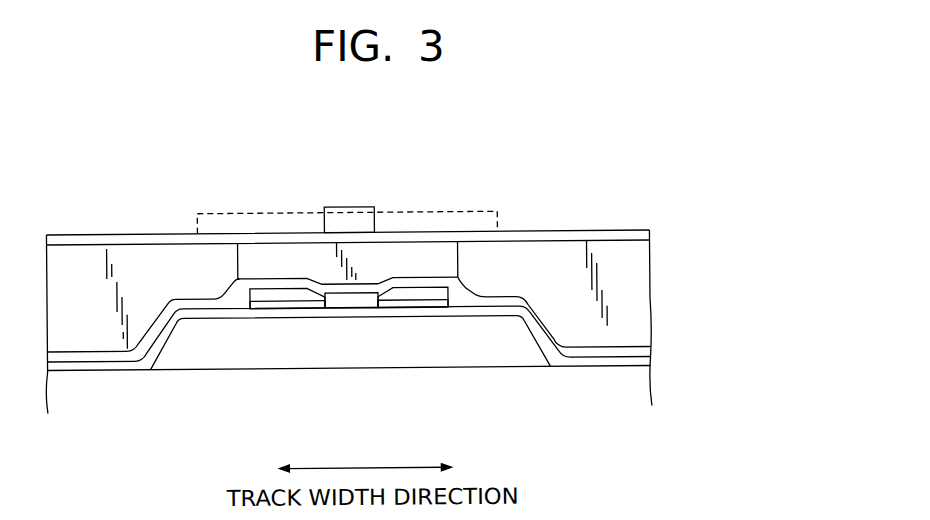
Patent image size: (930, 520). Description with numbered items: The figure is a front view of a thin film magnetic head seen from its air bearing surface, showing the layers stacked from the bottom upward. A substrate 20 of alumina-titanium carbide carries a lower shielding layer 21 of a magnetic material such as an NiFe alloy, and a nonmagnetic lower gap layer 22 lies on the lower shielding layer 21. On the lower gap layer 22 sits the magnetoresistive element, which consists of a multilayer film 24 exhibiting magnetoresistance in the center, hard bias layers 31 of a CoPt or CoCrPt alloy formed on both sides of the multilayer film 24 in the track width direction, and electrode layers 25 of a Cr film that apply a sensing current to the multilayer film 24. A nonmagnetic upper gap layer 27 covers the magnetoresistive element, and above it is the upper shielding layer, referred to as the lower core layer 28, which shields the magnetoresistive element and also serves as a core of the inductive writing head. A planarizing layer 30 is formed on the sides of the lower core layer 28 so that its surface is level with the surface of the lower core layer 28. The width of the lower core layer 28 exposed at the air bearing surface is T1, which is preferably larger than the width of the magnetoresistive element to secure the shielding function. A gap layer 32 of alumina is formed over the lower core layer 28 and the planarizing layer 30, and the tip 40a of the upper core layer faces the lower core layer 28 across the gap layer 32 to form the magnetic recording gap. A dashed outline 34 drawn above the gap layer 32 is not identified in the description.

The substrate 20 is at (633, 389).
The lower shielding layer 21 is at (358, 353).
The lower gap layer 22 is at (642, 359).
The multilayer film 24 is at (360, 300).
The electrode layers 25 is at (273, 293).
The upper gap layer 27 is at (643, 350).
The lower core layer 28 is at (300, 255).
The planarizing layer 30 is at (630, 287).
The hard bias layers 31 is at (280, 308).
The gap layer 32 is at (630, 237).
The resist pattern 34 is at (208, 215).
The tip of the upper core layer 40a is at (348, 223).
The width of the lower core layer T1 is at (458, 232).